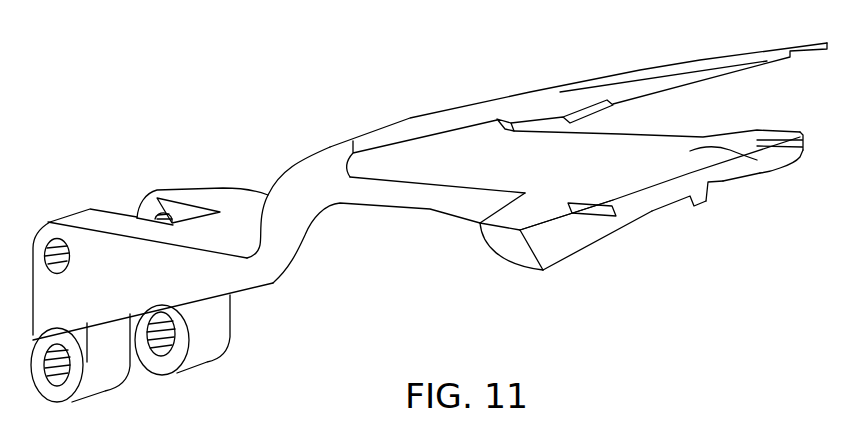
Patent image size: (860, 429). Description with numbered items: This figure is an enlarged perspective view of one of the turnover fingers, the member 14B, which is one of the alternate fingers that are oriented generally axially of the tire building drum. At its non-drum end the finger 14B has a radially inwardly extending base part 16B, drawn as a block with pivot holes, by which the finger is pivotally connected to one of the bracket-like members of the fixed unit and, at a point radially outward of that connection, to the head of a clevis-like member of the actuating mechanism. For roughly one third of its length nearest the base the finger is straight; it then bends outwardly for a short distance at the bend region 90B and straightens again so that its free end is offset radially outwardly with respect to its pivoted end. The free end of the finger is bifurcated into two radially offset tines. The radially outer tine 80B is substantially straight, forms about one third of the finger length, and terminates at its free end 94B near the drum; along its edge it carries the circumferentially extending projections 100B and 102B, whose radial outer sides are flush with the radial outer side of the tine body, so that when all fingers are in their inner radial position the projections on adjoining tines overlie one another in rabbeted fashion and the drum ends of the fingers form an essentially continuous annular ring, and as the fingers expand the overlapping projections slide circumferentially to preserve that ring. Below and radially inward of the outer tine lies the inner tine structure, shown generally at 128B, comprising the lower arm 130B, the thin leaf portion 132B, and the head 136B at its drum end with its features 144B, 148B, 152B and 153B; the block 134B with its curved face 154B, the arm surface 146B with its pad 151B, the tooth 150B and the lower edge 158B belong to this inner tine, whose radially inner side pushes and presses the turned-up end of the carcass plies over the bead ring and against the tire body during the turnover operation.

The turnover finger 14B is at (279, 288).
The base part 16B is at (136, 291).
The radially outer tine 80B is at (493, 104).
The bend portion of arm 90B is at (294, 170).
The free end of upper arm 94B is at (750, 53).
The circumferentially extending projection 100B is at (518, 133).
The circumferentially extending projection 102B is at (825, 46).
The jaw assembly 128B is at (602, 170).
The lower arm 130B is at (508, 215).
The leaf spring member 132B is at (707, 133).
The block 134B is at (526, 262).
The forked head 136B is at (803, 131).
The tooth 144B is at (707, 180).
The jaw arm 146B is at (573, 240).
The lower lip of head 148B is at (777, 171).
The tooth 150B is at (680, 203).
The pad 151B is at (630, 205).
The shoulder 152B is at (760, 172).
The recess 153B is at (697, 150).
The curved face of block 154B is at (500, 257).
The lower edge of jaw arm 158B is at (567, 258).